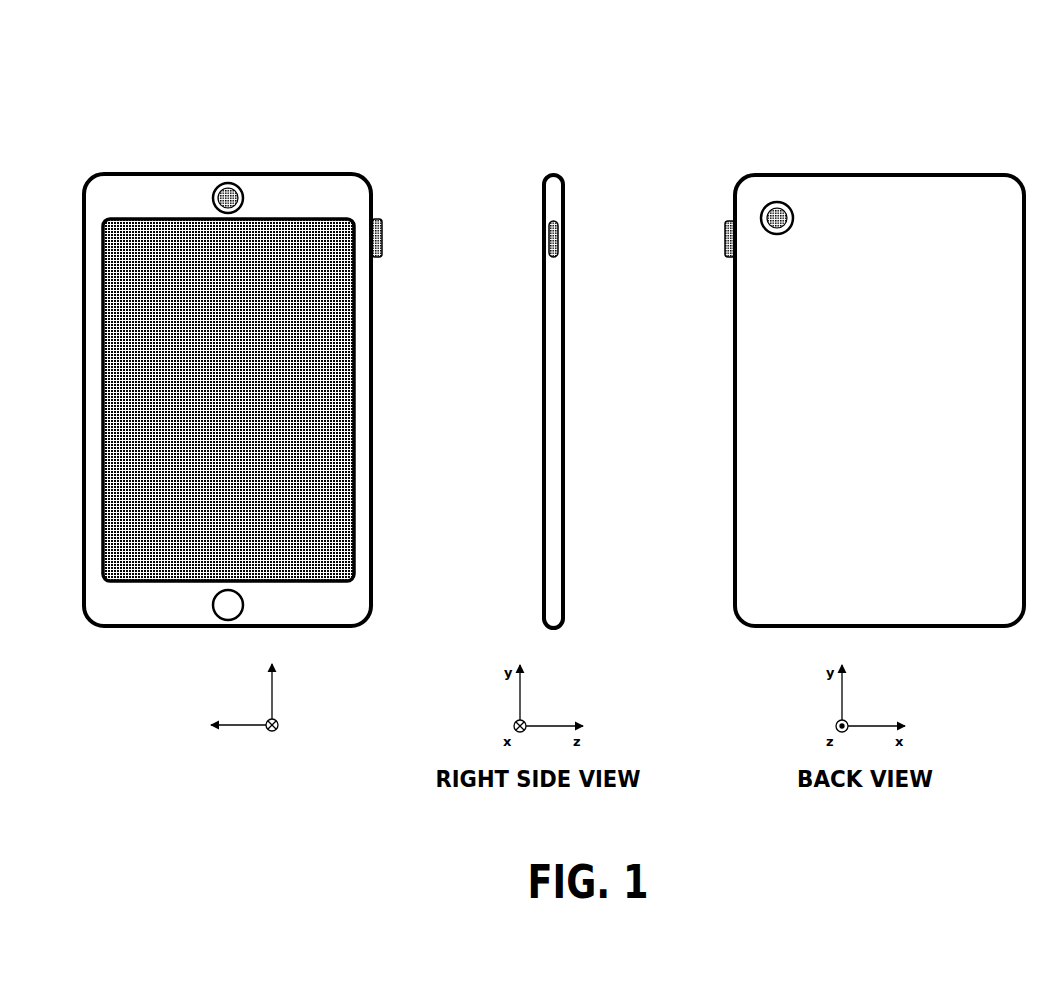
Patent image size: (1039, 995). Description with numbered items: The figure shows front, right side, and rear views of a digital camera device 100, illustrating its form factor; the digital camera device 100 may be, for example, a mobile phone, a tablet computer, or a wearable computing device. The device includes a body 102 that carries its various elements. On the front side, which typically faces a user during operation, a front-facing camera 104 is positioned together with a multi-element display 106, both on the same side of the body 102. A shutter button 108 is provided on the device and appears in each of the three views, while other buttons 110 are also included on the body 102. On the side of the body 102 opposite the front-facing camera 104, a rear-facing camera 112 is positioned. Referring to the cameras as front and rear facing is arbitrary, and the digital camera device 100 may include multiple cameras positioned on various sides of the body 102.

The digital camera device 100 is at (277, 63).
The body 102 is at (197, 172).
The front-facing camera 104 is at (242, 188).
The multi-element display 106 is at (325, 218).
The shutter button 108 is at (383, 228).
The other buttons 110 is at (226, 621).
The rear-facing camera 112 is at (772, 203).